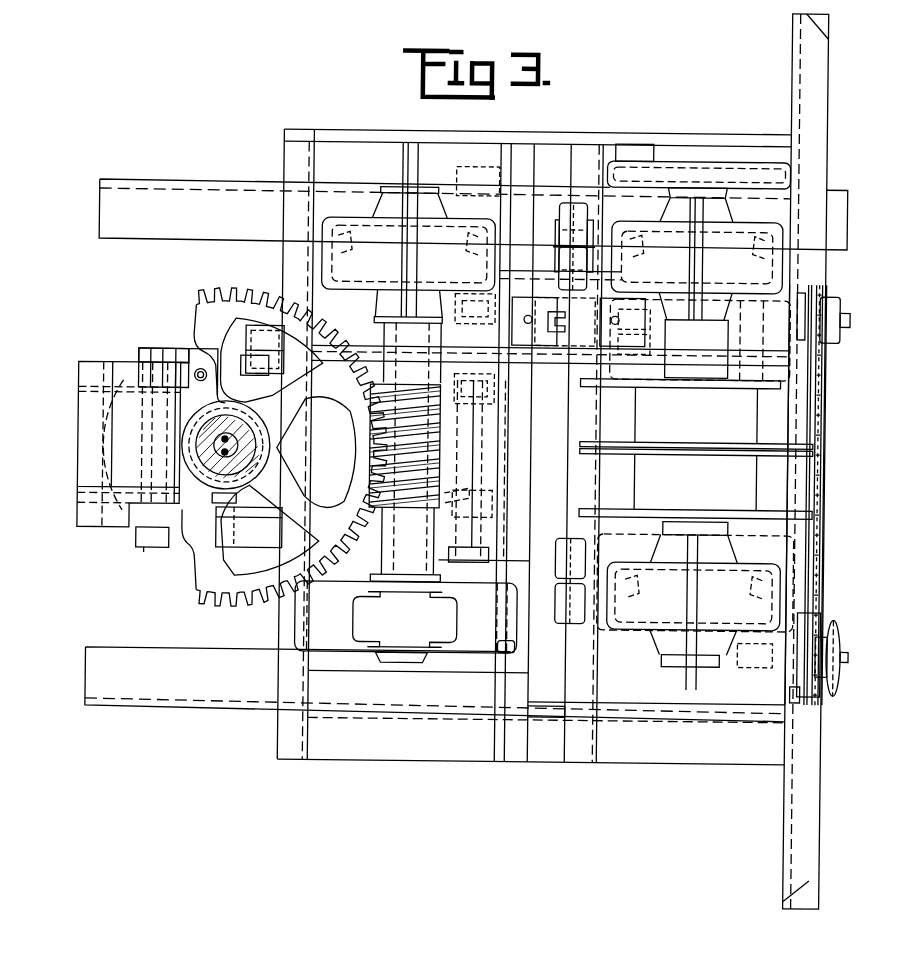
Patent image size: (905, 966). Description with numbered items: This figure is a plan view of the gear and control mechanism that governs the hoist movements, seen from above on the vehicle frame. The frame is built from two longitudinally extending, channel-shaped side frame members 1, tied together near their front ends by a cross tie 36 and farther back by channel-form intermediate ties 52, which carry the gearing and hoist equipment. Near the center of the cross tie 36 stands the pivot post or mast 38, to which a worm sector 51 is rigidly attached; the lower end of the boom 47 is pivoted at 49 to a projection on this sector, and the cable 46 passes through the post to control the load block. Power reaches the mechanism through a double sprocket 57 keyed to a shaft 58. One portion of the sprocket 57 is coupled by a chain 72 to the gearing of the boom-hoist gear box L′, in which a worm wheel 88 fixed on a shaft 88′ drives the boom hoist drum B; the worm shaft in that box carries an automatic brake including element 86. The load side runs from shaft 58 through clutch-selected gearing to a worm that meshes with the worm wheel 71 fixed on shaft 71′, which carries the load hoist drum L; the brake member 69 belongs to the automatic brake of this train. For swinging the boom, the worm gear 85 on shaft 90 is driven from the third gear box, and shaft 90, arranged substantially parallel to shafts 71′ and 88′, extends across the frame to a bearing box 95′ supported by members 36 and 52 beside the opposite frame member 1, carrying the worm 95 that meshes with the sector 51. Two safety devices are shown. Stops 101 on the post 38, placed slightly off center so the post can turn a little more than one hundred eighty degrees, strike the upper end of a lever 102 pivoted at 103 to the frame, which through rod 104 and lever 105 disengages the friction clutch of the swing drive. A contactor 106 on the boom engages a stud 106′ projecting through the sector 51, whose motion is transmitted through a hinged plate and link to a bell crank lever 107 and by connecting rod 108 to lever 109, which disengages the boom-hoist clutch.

The side frame members 1 is at (466, 451).
The cross tie 36 is at (292, 762).
The pivot post 38 is at (222, 420).
The cable 46 is at (205, 456).
The boom 47 is at (85, 408).
The boom pivot 49 is at (155, 547).
The worm sector 51 is at (243, 300).
The intermediate ties 52 is at (515, 762).
The sprocket 57 is at (833, 632).
The shaft 58 is at (800, 654).
The brake member 69 is at (560, 628).
The worm wheel 71 is at (658, 598).
The shaft 71′ is at (672, 610).
The chain 72 is at (815, 489).
The worm gear 85 is at (372, 256).
The brake element 86 is at (572, 210).
The worm wheel 88 is at (728, 258).
The shaft 88′ is at (715, 280).
The shaft 90 is at (376, 310).
The worm 95 is at (432, 452).
The bearing box 95′ is at (405, 617).
The stops 101 is at (170, 433).
The lever 102 is at (216, 490).
The lever pivot 103 is at (233, 515).
The rod 104 is at (340, 478).
The lever 105 is at (480, 508).
The contactor 106 is at (190, 373).
The stud 106′ is at (197, 368).
The bell crank lever 107 is at (250, 357).
The connecting rod 108 is at (558, 357).
The lever 109 is at (700, 340).
The boom hoist drum B is at (697, 418).
The load hoist drum L is at (696, 487).
The gear box L′ is at (748, 216).